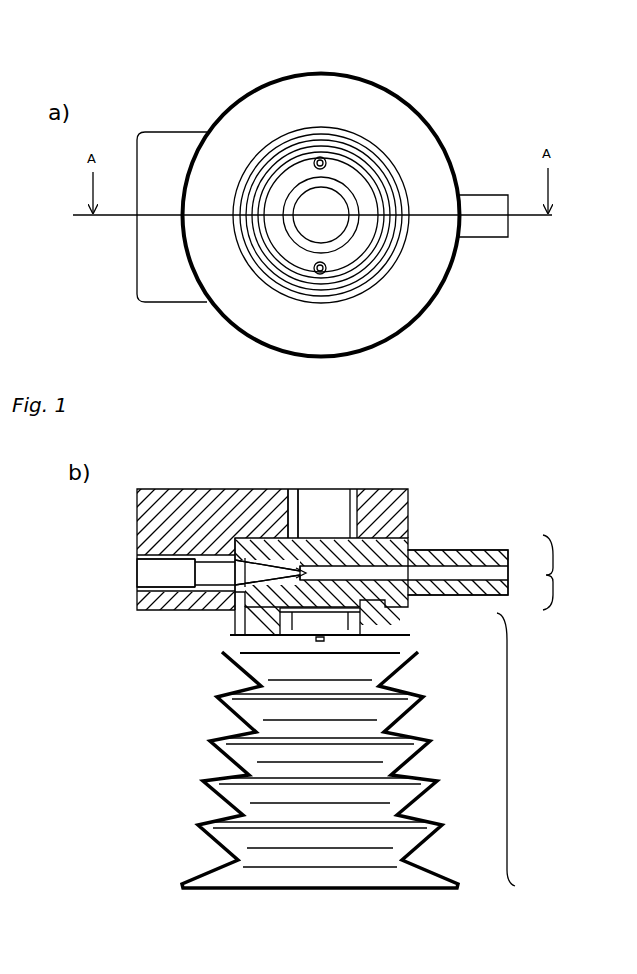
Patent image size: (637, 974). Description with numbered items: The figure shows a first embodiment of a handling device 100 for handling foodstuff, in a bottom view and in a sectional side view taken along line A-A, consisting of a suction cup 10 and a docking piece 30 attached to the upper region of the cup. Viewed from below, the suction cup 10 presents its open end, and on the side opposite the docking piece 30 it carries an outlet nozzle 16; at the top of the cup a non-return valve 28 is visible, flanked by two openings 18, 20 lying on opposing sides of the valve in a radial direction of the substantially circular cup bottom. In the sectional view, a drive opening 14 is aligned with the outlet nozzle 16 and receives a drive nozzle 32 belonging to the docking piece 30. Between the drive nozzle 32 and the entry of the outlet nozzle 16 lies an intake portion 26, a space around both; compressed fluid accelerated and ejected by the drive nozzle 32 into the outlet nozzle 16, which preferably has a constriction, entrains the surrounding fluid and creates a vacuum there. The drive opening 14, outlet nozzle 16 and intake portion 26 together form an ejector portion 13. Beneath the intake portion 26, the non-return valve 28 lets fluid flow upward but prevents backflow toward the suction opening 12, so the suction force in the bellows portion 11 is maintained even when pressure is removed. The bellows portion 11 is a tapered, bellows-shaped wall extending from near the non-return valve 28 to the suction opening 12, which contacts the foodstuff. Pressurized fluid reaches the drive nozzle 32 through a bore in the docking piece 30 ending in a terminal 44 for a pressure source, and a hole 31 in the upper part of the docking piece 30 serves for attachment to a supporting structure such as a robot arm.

The handling device 100 is at (268, 60).
The suction cup 10 is at (360, 70).
The bellows portion 11 is at (361, 750).
The suction opening 12 is at (330, 889).
The ejector portion 13 is at (562, 572).
The drive opening 14 is at (240, 600).
The outlet nozzle 16 is at (485, 195).
The opening 18 is at (327, 160).
The opening 20 is at (327, 272).
The intake portion 26 is at (255, 603).
The non-return valve 28 is at (333, 206).
The docking piece 30 is at (162, 126).
The hole 31 is at (300, 492).
The drive nozzle 32 is at (304, 562).
The terminal 44 is at (155, 577).